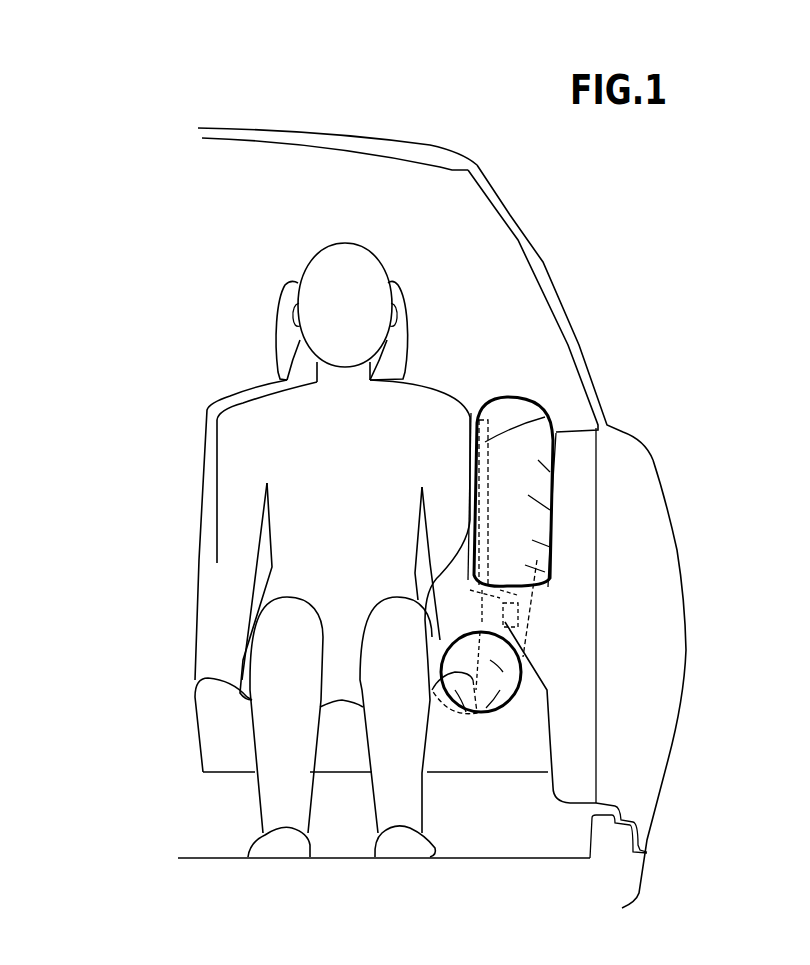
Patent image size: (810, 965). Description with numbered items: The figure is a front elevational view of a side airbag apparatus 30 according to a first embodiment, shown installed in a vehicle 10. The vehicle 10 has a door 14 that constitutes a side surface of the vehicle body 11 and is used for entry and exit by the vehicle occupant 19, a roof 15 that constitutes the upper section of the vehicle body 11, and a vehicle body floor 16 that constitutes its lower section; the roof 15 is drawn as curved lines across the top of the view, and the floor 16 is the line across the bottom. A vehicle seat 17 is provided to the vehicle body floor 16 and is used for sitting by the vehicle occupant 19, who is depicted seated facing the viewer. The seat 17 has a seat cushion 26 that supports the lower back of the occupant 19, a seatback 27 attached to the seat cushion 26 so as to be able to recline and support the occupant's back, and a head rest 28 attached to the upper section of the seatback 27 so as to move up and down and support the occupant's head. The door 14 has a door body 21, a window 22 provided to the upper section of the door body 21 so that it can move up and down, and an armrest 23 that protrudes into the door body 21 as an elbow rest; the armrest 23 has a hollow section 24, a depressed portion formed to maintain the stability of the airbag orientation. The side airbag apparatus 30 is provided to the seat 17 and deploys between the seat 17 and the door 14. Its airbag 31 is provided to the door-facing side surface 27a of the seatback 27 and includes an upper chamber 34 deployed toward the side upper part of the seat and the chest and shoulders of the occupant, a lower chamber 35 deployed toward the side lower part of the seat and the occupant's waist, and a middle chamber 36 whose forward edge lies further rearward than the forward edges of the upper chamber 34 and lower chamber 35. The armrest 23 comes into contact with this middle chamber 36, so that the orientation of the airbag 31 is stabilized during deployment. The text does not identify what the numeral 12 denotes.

The vehicle 10 is at (115, 75).
The vehicle body 11 is at (686, 764).
The roof headliner 12 is at (405, 183).
The door 14 is at (686, 654).
The roof 15 is at (357, 134).
The vehicle body floor 16 is at (193, 858).
The vehicle seat 17 is at (190, 447).
The vehicle occupant 19 is at (223, 410).
The door body 21 is at (667, 683).
The window 22 is at (552, 292).
The armrest 23 is at (500, 596).
The hollow section 24 is at (470, 590).
The seat cushion 26 is at (195, 723).
The seatback 27 is at (188, 600).
The door-facing side surface 27a is at (485, 442).
The head rest 28 is at (273, 343).
The side airbag apparatus 30 is at (518, 373).
The airbag 31 is at (715, 466).
The upper chamber 34 is at (550, 488).
The lower chamber 35 is at (493, 673).
The middle chamber 36 is at (525, 600).